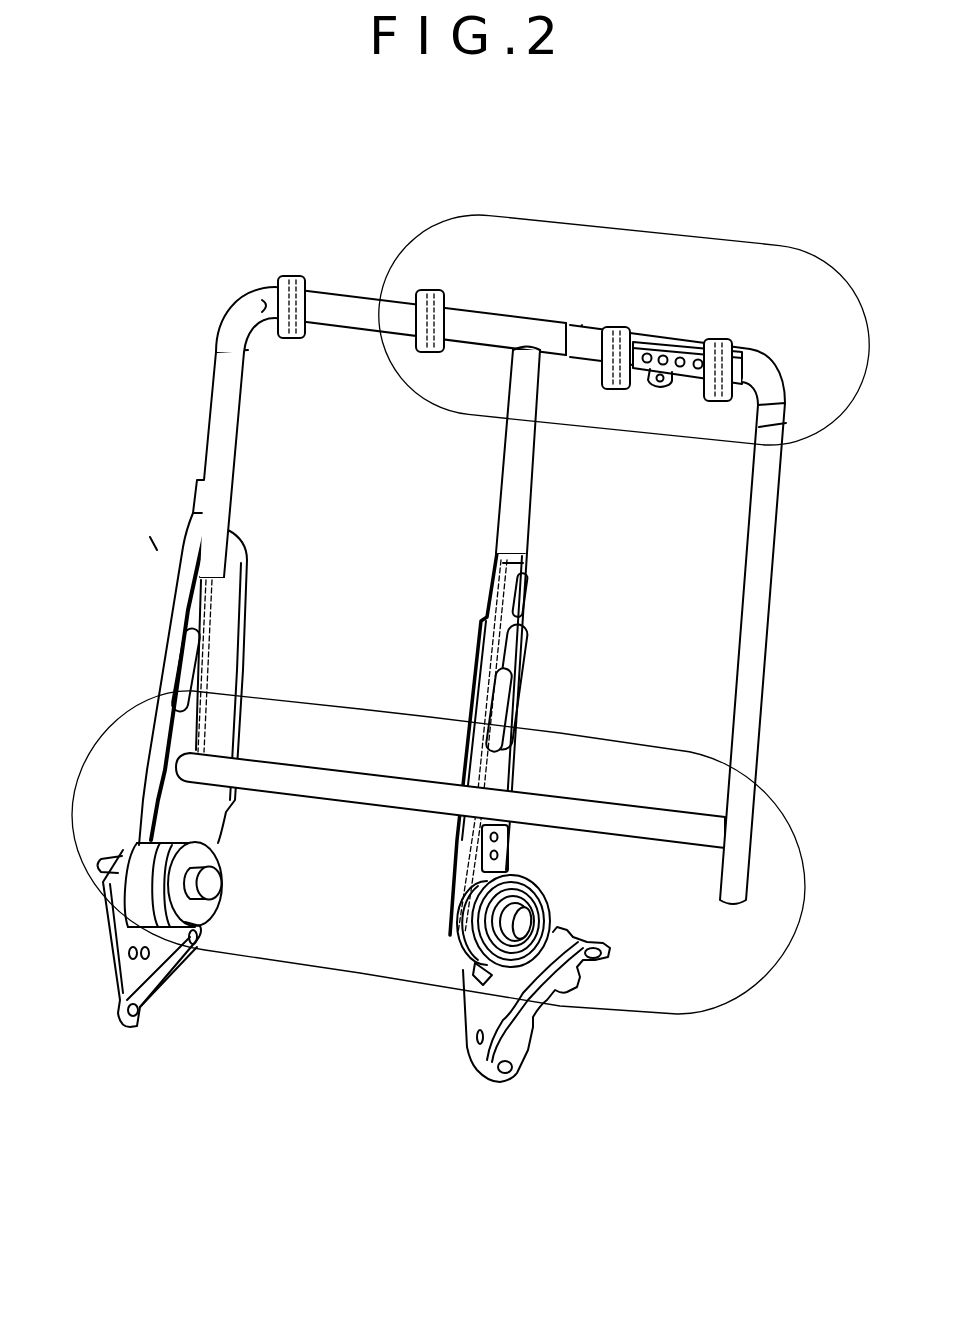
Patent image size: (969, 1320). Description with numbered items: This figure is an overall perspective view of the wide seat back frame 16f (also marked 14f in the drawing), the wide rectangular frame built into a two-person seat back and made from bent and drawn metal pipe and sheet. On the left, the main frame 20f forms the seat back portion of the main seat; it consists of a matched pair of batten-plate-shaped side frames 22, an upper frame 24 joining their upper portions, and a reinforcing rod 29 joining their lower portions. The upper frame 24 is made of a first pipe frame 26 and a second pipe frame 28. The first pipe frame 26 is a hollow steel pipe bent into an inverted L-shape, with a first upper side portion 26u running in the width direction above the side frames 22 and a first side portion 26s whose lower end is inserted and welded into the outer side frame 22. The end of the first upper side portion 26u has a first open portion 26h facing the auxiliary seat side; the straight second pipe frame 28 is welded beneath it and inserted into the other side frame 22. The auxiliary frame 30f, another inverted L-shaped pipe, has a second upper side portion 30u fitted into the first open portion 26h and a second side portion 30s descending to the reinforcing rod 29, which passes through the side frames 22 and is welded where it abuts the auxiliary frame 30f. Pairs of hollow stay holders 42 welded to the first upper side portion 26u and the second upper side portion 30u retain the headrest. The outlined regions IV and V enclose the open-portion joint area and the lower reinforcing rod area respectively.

The wide seat back frame 16f is at (471, 354).
The seat back frame structure 14f is at (471, 378).
The upper frame 24 is at (350, 378).
The first pipe frame 26 is at (350, 378).
The first side portion 26s is at (226, 398).
The first upper side portion 26u is at (337, 322).
The first open portion 26h is at (580, 328).
The main frame 20f is at (232, 303).
The second pipe frame 28 is at (503, 460).
The second upper side portion 30u is at (597, 365).
The auxiliary frame 30f is at (781, 383).
The second side portion 30s is at (727, 602).
The stay holders 42 is at (293, 278).
The side frames 22 is at (228, 632).
The reinforcing rod 29 is at (318, 783).
The section line IV is at (678, 222).
The section line V is at (322, 980).